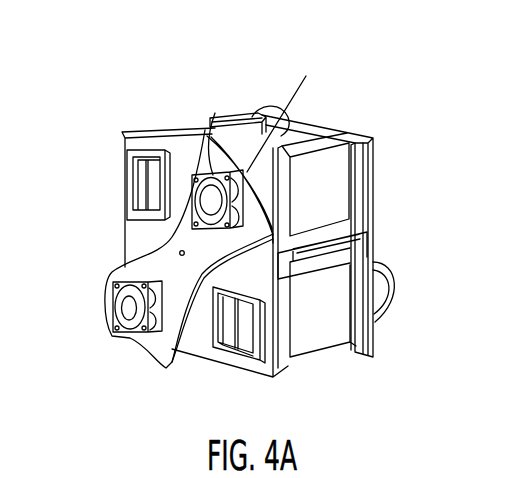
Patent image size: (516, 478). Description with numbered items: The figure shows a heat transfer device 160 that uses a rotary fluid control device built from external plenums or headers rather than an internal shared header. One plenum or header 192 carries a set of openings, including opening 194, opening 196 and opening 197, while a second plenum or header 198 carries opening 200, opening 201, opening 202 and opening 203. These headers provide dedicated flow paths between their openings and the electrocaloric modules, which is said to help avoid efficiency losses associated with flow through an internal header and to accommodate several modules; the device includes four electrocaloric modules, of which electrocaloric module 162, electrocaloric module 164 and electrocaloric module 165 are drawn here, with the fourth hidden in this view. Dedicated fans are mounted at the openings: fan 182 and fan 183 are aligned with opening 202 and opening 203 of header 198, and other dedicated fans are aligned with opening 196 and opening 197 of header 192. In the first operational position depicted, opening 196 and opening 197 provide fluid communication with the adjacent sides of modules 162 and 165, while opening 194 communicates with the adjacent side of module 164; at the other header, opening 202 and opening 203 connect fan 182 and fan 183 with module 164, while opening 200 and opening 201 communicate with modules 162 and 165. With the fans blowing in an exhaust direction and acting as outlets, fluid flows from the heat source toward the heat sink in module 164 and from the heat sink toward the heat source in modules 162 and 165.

The heat transfer device 160 is at (375, 77).
The electrocaloric module 162 is at (358, 347).
The electrocaloric module 164 is at (335, 202).
The electrocaloric module 165 is at (192, 128).
The fan 182 is at (210, 193).
The fan 183 is at (113, 306).
The plenum or header 192 is at (363, 195).
The opening 194 is at (373, 177).
The opening 196 is at (373, 320).
The opening 197 is at (255, 113).
The plenum or header 198 is at (280, 365).
The opening 200 is at (215, 345).
The opening 201 is at (134, 191).
The opening 202 is at (288, 107).
The opening 203 is at (142, 262).